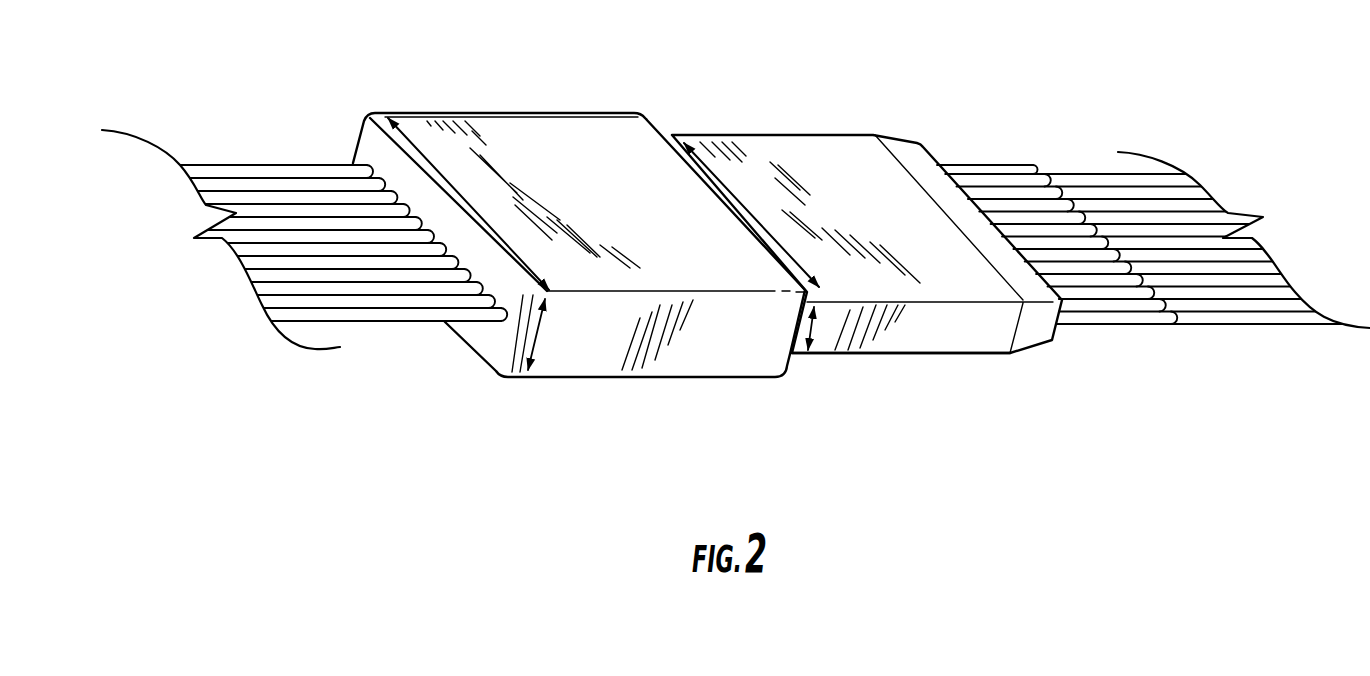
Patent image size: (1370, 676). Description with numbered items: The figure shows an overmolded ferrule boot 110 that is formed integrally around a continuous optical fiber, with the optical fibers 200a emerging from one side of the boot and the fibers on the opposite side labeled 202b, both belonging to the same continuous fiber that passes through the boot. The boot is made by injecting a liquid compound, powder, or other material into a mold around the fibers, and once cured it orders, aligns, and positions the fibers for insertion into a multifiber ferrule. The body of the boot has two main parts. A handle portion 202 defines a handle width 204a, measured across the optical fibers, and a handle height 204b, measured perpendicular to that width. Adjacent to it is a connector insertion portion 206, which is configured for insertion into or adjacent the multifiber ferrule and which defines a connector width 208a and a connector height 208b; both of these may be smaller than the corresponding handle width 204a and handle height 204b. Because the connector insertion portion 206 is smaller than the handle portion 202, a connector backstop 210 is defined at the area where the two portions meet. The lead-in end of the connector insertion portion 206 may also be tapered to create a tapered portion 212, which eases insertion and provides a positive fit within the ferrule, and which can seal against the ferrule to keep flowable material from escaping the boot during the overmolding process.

The overmolded ferrule boot 110 is at (825, 413).
The optical fibers 200a is at (298, 155).
The handle portion 202 is at (465, 100).
The second ribbon cable portion 202b is at (1234, 326).
The handle width 204a is at (488, 249).
The handle height 204b is at (550, 327).
The connector insertion portion 206 is at (785, 123).
The connector width 208a is at (863, 200).
The connector height 208b is at (832, 356).
The connector backstop 210 is at (662, 116).
The tapered portion 212 is at (898, 126).